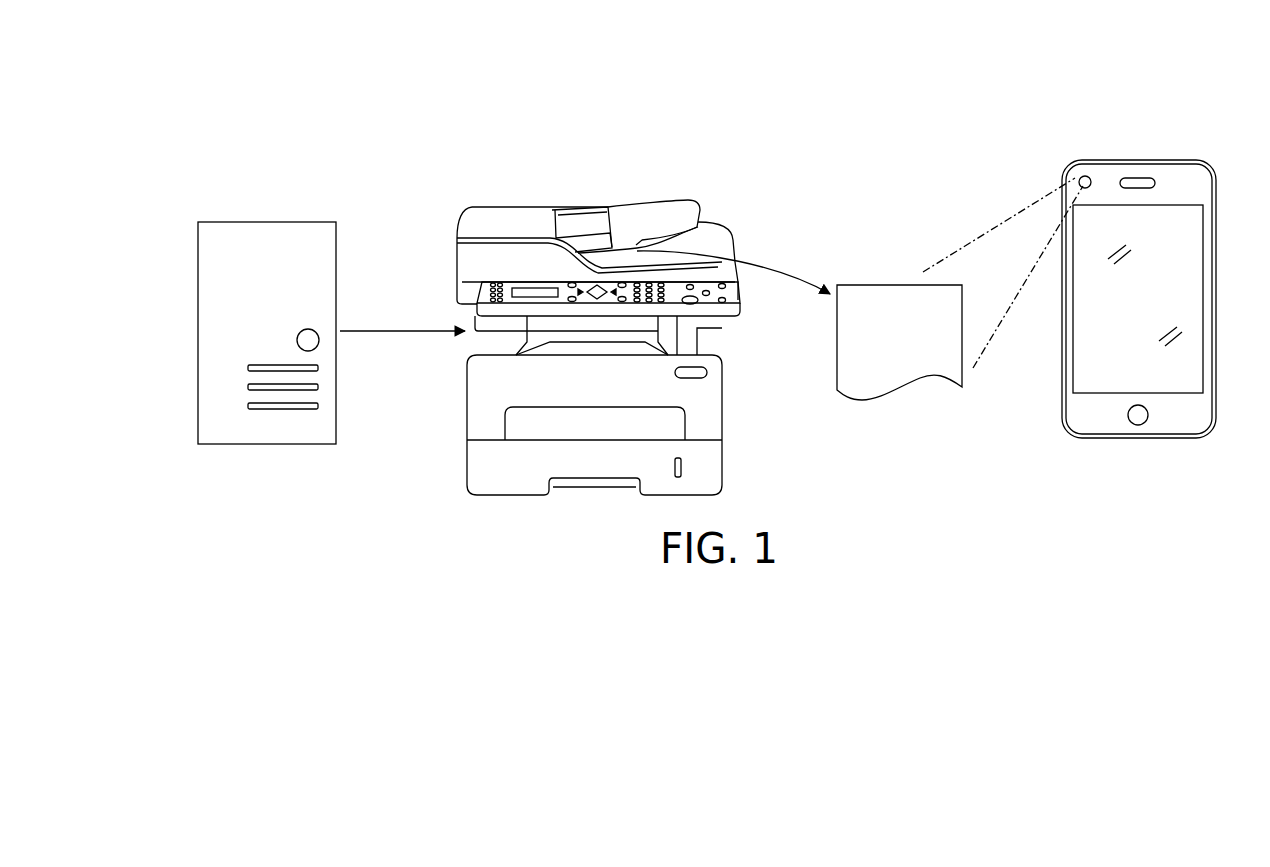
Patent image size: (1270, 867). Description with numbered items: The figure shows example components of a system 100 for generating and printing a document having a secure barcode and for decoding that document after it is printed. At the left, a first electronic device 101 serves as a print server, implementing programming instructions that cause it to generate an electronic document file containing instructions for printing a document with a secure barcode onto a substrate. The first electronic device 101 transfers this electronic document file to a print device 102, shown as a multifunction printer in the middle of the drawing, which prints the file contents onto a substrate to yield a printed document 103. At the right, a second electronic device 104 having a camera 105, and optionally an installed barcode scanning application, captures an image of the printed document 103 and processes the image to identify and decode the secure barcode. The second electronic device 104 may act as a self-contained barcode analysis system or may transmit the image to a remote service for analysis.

The system 100 is at (443, 70).
The first electronic device 101 is at (268, 221).
The print device 102 is at (511, 206).
The printed document 103 is at (898, 284).
The second electronic device 104 is at (1160, 160).
The camera 105 is at (1087, 178).